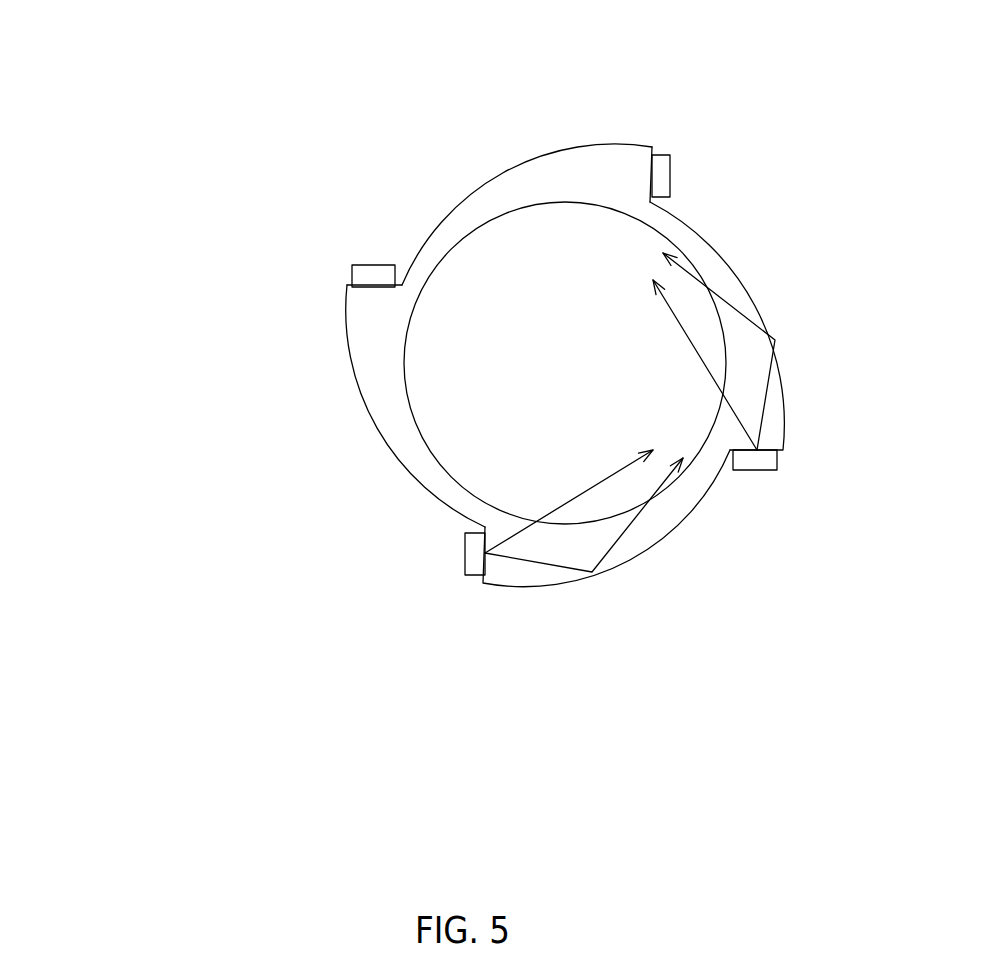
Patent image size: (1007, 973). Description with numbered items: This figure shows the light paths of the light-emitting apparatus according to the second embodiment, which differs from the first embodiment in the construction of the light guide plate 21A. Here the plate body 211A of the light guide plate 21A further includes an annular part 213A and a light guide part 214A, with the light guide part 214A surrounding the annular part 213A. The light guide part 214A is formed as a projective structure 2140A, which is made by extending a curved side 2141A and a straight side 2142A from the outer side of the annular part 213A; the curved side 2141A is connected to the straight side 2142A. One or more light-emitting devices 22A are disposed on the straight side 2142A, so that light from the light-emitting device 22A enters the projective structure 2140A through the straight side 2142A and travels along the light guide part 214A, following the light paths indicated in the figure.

The light guide plate 21A is at (436, 301).
The plate body 211A is at (512, 150).
The annular part 213A is at (452, 228).
The light guide part 214A is at (623, 165).
The light-emitting device 22A is at (375, 272).
The projective structure 2140A is at (266, 381).
The curved side 2141A is at (348, 368).
The straight side 2142A is at (347, 282).